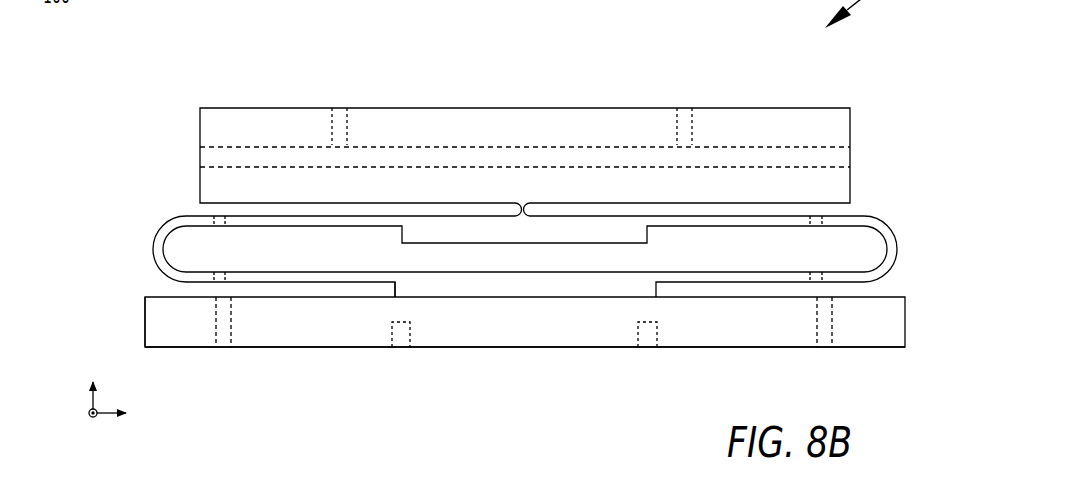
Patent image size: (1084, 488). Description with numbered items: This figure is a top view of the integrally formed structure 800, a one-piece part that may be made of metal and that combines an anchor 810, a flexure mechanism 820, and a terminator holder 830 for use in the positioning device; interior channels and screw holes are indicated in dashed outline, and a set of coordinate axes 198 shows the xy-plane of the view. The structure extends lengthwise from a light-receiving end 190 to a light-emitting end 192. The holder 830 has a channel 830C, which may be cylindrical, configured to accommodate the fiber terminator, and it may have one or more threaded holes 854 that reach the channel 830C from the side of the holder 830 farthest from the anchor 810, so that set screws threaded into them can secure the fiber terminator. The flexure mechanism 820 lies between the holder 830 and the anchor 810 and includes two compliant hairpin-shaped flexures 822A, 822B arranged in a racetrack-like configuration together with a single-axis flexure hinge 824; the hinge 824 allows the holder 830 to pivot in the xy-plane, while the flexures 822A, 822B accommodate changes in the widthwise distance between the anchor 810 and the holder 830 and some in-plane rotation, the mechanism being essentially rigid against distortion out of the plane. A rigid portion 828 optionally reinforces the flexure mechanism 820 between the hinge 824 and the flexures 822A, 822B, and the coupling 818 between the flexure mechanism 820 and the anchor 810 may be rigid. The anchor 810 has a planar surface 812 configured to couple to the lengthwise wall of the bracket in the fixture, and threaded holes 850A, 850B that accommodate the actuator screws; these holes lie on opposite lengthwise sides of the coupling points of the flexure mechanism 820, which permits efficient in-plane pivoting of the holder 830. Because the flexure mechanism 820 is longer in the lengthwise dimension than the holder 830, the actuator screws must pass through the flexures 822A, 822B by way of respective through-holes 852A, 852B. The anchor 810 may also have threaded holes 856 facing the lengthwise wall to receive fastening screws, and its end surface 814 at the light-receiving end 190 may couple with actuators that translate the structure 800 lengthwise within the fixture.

The integrally formed structure 800 is at (871, 14).
The light-receiving end 190 is at (100, 145).
The light-emitting end 192 is at (905, 143).
The terminator holder 830 is at (540, 137).
The channel 830C is at (313, 147).
The threaded holes 854 is at (343, 110).
The single-axis flexure hinge 824 is at (516, 212).
The flexure mechanism 820 is at (510, 233).
The hairpin-shaped flexure 822A is at (152, 249).
The hairpin-shaped flexure 822B is at (898, 250).
The through-hole 852A is at (225, 218).
The through-hole 852B is at (823, 219).
The rigid portion 828 is at (651, 235).
The anchor 810 is at (540, 336).
The end surface 814 is at (141, 328).
The planar surface 812 is at (572, 350).
The coupling 818 is at (393, 289).
The threaded hole 850A is at (226, 347).
The threaded hole 850B is at (826, 347).
The threaded holes 856 is at (402, 341).
The coordinate axes 198 is at (94, 430).